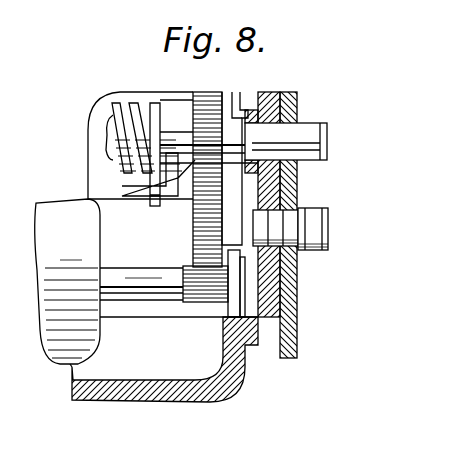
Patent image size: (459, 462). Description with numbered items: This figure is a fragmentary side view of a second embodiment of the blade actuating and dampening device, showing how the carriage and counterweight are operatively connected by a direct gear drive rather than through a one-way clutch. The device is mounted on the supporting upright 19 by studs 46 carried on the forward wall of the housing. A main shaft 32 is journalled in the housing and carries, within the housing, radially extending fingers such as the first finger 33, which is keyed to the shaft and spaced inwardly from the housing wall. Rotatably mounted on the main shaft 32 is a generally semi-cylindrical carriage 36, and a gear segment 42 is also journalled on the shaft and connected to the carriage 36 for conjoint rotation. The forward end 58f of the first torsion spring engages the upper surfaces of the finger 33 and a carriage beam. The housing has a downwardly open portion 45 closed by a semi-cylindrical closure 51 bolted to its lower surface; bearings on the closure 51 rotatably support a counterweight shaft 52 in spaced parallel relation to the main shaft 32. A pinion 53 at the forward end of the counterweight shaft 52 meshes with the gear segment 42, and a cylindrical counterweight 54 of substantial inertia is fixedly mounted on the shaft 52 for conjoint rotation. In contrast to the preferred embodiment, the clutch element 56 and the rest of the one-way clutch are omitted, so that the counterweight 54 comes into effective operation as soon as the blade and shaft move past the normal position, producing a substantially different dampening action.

The supporting upright 19 is at (286, 318).
The main shaft 32 is at (306, 131).
The first finger 33 is at (131, 191).
The carriage 36 is at (238, 100).
The gear segment 42 is at (206, 106).
The downwardly open portion of the housing 45 is at (270, 268).
The studs 46 is at (330, 222).
The semi-cylindrical closure 51 is at (236, 381).
The counterweight shaft 52 is at (147, 290).
The pinion 53 is at (206, 286).
The counterweight 54 is at (60, 210).
The clutch element 56 is at (137, 106).
The forward end of the first torsion spring 58f is at (157, 204).